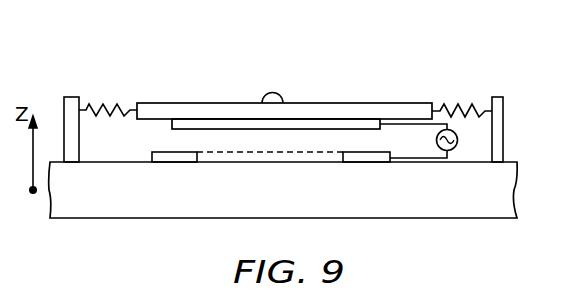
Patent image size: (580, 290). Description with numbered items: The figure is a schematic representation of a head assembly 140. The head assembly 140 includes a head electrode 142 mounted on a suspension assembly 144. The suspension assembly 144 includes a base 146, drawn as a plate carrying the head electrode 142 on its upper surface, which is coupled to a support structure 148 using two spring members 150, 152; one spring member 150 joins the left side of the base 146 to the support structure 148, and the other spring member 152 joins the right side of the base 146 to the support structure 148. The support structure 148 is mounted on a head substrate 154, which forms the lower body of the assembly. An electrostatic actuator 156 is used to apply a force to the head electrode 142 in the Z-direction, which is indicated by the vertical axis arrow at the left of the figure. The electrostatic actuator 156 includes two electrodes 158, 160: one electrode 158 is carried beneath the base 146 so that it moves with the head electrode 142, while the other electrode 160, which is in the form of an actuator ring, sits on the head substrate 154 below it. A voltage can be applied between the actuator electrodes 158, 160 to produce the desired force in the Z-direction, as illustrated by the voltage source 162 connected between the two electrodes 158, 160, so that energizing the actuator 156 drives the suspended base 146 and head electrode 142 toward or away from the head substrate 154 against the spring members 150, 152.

The head assembly 140 is at (481, 65).
The head electrode 142 is at (275, 91).
The suspension assembly 144 is at (187, 76).
The base 146 is at (230, 109).
The support structure 148 is at (504, 126).
The spring member 150 is at (97, 105).
The spring member 152 is at (456, 105).
The head substrate 154 is at (432, 219).
The electrostatic actuator 156 is at (143, 141).
The electrode 158 is at (328, 127).
The electrode 160 is at (371, 159).
The voltage source 162 is at (455, 152).